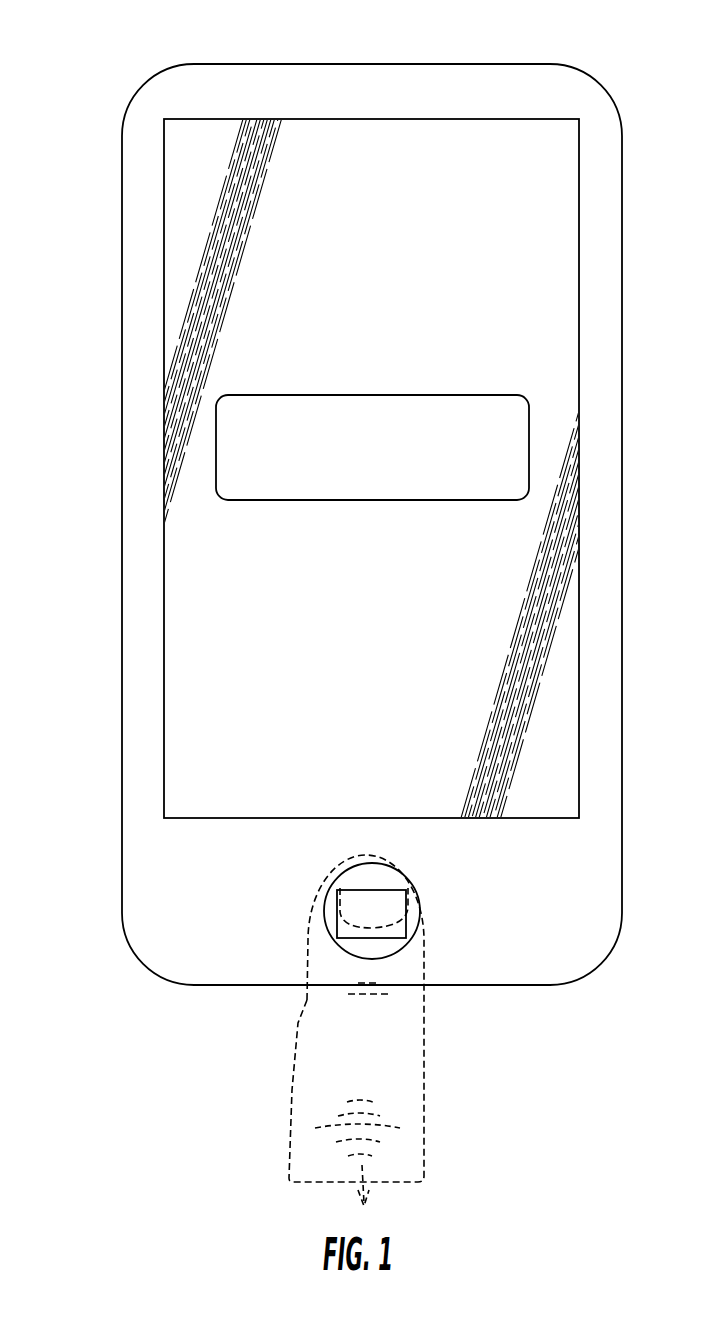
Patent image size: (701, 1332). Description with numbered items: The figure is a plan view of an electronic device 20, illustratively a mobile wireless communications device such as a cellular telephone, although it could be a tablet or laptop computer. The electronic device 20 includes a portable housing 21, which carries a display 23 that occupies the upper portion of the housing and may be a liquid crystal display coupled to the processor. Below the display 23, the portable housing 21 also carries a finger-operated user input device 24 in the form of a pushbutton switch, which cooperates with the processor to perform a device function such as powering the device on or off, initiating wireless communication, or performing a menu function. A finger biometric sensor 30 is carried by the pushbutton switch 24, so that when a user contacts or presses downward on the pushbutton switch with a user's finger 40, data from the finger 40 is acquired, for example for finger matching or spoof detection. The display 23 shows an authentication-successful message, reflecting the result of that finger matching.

The electronic device 20 is at (100, 86).
The portable housing 21 is at (122, 243).
The display 23 is at (166, 292).
The finger-operated user input device 24 is at (327, 937).
The finger biometric sensor 30 is at (337, 905).
The user's finger 40 is at (300, 1023).